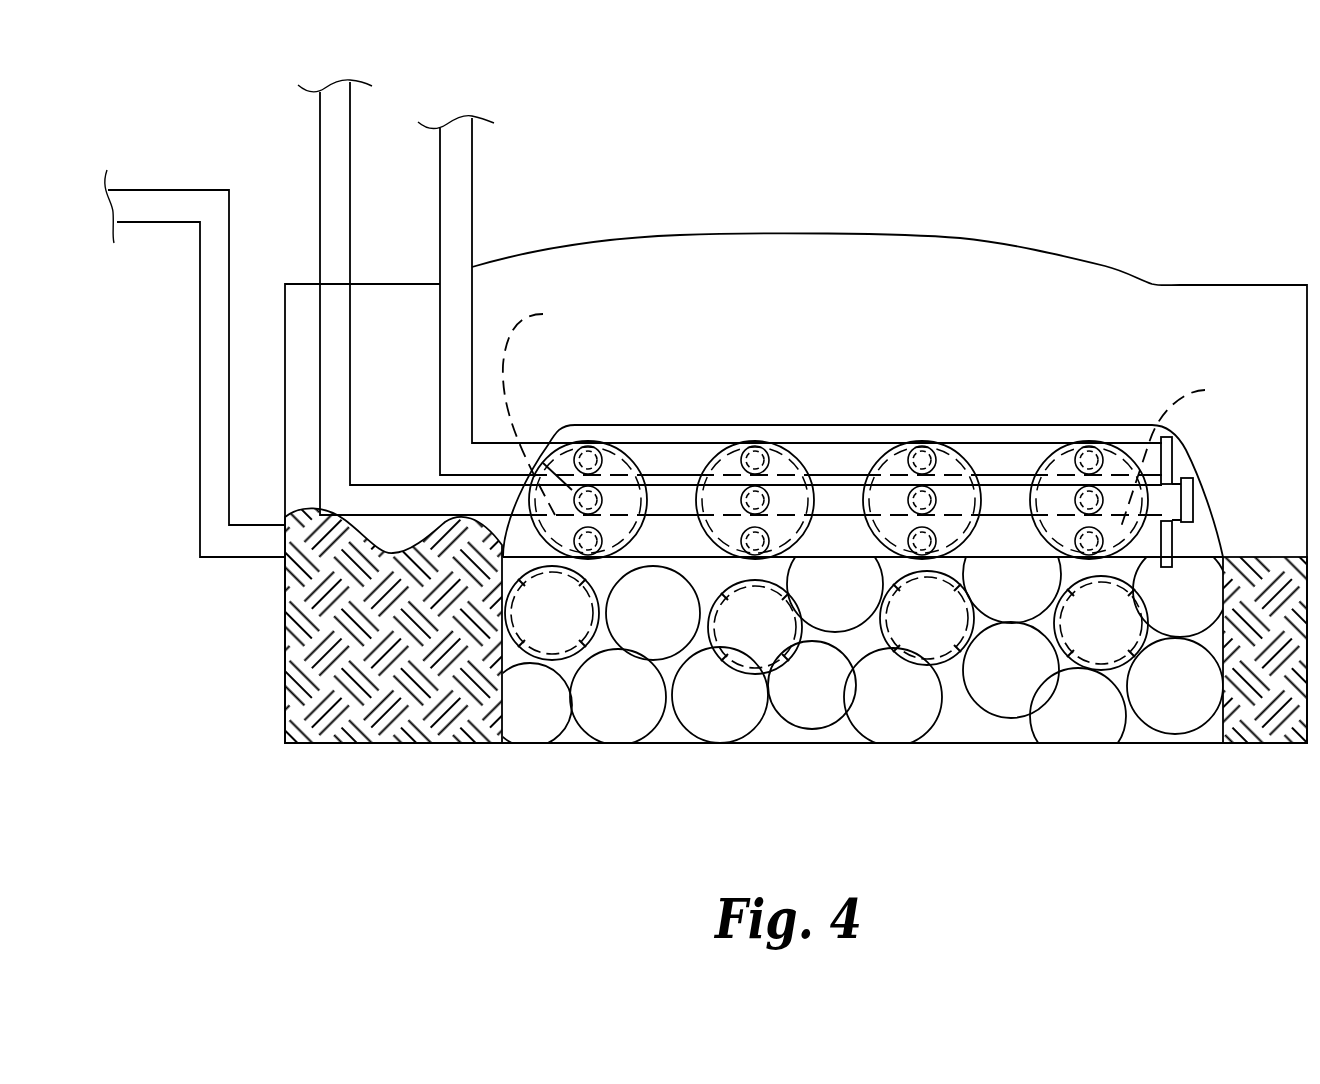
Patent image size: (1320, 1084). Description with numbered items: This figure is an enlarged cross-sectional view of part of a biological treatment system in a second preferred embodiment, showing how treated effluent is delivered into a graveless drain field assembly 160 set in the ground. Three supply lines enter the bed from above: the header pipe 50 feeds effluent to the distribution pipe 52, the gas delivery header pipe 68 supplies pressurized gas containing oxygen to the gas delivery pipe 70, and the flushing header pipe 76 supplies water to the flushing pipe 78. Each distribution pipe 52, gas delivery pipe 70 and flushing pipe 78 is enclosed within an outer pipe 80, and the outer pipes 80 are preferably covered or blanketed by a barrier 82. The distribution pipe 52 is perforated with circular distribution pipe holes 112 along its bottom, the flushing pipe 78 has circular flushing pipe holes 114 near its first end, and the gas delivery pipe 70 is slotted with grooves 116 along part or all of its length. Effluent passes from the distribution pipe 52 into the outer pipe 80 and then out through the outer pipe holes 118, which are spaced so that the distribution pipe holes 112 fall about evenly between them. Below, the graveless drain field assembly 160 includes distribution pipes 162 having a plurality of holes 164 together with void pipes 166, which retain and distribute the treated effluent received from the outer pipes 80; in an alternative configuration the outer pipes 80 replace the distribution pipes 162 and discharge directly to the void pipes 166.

The header pipe 50 is at (197, 191).
The distribution pipe 52 is at (1150, 552).
The gas delivery header pipe 68 is at (460, 200).
The gas delivery pipe 70 is at (923, 449).
The flushing header pipe 76 is at (320, 132).
The flushing pipe 78 is at (770, 497).
The outer pipe 80 is at (1043, 457).
The barrier 82 is at (1070, 427).
The distribution pipe hole 112 is at (928, 625).
The flushing pipe hole 114 is at (878, 418).
The groove 116 is at (900, 424).
The outer pipe hole 118 is at (1188, 483).
The graveless drain field assembly 160 is at (857, 636).
The distribution pipe 162 is at (739, 615).
The hole 164 is at (1130, 645).
The void pipe 166 is at (866, 665).